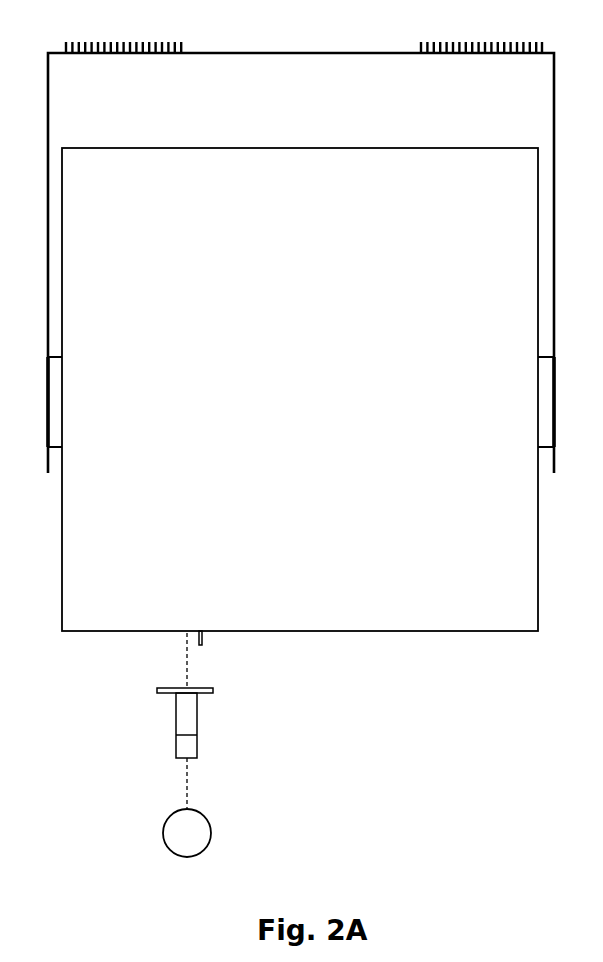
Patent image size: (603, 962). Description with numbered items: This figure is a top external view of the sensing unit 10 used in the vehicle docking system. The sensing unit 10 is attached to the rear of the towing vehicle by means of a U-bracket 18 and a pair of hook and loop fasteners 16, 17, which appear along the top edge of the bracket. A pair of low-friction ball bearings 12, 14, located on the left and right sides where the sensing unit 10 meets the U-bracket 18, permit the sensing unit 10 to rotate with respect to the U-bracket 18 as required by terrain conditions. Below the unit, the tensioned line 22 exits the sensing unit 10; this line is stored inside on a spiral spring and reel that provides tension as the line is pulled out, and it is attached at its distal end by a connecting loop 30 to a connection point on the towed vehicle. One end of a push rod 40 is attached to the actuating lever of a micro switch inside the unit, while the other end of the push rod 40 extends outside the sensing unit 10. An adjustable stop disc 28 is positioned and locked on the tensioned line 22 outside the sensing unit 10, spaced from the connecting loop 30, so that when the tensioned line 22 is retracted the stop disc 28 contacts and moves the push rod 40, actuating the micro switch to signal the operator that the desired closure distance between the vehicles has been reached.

The sensing unit 10 is at (221, 141).
The low-friction ball bearing 12 is at (544, 353).
The low-friction ball bearing 14 is at (54, 350).
The hook and loop fastener 16 is at (128, 33).
The hook and loop fastener 17 is at (457, 26).
The U-bracket 18 is at (259, 47).
The tensioned line 22 is at (190, 784).
The adjustable stop disc 28 is at (199, 720).
The connecting loop 30 is at (210, 819).
The push rod 40 is at (201, 649).